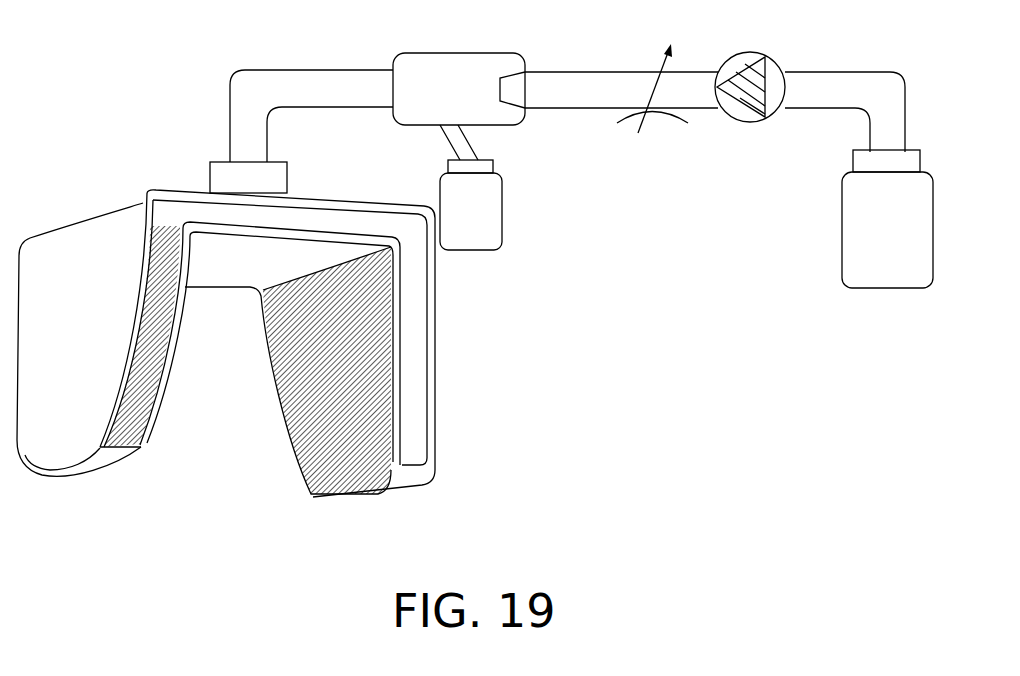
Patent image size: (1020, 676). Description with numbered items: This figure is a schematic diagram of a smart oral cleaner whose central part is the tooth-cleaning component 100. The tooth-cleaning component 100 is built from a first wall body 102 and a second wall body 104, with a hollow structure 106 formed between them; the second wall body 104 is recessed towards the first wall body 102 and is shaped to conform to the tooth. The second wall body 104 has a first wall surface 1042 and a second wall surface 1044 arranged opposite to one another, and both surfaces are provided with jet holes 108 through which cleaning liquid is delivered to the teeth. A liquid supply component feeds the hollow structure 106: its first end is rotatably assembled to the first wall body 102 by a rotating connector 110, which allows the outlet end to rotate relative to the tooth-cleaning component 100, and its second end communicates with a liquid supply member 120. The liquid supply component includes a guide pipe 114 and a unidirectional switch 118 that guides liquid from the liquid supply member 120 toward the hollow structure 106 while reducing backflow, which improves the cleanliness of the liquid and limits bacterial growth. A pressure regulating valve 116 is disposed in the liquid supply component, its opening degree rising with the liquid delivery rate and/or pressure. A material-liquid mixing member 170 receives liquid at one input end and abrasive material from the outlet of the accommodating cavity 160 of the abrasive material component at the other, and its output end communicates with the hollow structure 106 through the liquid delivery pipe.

The tooth-cleaning component 100 is at (447, 330).
The first wall body 102 is at (433, 428).
The second wall body 104 is at (153, 412).
The first wall surface 1042 is at (143, 440).
The second wall surface 1044 is at (302, 473).
The hollow structure 106 is at (405, 393).
The jet holes 108 is at (257, 372).
The rotating connector 110 is at (210, 162).
The guide pipe 114 is at (230, 100).
The pressure regulating valve 116 is at (655, 63).
The unidirectional switch 118 is at (767, 60).
The liquid supply member 120 is at (845, 250).
The accommodating cavity 160 is at (505, 213).
The material-liquid mixing member 170 is at (397, 57).